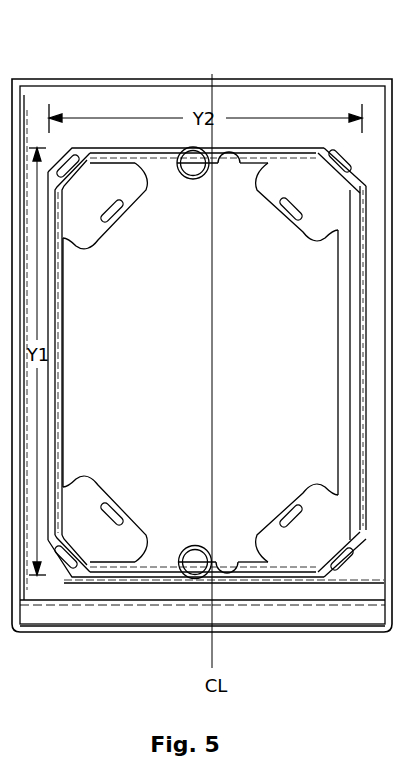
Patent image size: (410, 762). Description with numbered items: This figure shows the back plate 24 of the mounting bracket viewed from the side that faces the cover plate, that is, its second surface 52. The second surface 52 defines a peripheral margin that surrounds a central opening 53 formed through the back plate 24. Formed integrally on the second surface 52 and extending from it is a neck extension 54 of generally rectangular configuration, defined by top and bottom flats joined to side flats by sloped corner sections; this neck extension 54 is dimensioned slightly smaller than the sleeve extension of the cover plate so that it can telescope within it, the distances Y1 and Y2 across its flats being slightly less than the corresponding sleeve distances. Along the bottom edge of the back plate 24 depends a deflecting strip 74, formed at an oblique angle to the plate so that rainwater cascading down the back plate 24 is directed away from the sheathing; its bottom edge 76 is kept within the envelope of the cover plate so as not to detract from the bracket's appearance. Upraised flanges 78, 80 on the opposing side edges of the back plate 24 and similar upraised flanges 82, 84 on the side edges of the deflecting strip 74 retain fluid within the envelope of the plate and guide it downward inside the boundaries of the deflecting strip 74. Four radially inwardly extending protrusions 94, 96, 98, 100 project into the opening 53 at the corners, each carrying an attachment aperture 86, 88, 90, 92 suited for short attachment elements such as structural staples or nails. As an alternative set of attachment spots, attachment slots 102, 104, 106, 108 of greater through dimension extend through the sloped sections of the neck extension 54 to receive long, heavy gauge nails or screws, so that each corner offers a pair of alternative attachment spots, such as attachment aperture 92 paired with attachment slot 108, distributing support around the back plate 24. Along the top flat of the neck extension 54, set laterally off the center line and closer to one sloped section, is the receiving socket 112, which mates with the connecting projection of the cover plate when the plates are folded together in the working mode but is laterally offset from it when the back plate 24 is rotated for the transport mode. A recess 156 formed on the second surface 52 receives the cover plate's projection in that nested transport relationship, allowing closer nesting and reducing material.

The back plate 24 is at (188, 69).
The second surface 52 is at (128, 97).
The opening 53 is at (134, 351).
The neck extension 54 is at (363, 150).
The deflecting strip 74 is at (158, 614).
The bottom edge 76 is at (268, 636).
The upraised flange 78 is at (24, 113).
The upraised flange 80 is at (381, 107).
The upraised flange 82 is at (25, 603).
The upraised flange 84 is at (382, 604).
The attachment aperture 86 is at (117, 216).
The attachment aperture 88 is at (289, 214).
The attachment aperture 90 is at (289, 510).
The attachment aperture 92 is at (118, 508).
The radially inwardly extending protrusion 94 is at (119, 191).
The radially inwardly extending protrusion 96 is at (310, 190).
The radially inwardly extending protrusion 98 is at (315, 553).
The radially inwardly extending protrusion 100 is at (88, 553).
The attachment slot 102 is at (60, 158).
The attachment slot 104 is at (349, 153).
The attachment slot 106 is at (345, 566).
The attachment slot 108 is at (63, 563).
The receiving socket 112 is at (194, 166).
The recess 156 is at (226, 561).